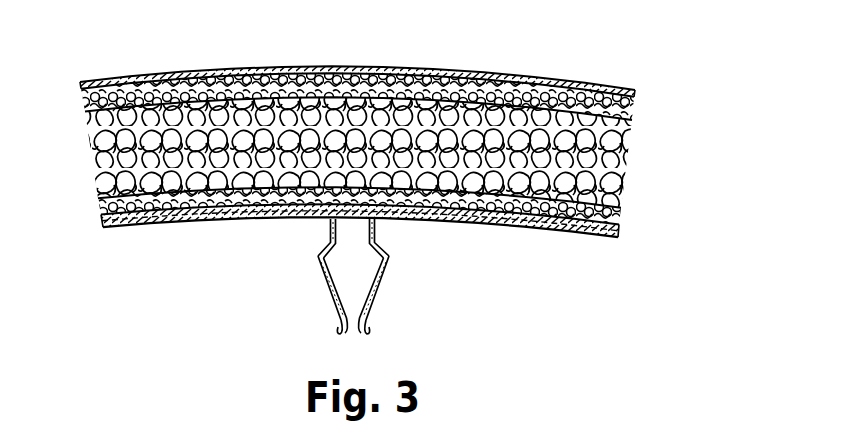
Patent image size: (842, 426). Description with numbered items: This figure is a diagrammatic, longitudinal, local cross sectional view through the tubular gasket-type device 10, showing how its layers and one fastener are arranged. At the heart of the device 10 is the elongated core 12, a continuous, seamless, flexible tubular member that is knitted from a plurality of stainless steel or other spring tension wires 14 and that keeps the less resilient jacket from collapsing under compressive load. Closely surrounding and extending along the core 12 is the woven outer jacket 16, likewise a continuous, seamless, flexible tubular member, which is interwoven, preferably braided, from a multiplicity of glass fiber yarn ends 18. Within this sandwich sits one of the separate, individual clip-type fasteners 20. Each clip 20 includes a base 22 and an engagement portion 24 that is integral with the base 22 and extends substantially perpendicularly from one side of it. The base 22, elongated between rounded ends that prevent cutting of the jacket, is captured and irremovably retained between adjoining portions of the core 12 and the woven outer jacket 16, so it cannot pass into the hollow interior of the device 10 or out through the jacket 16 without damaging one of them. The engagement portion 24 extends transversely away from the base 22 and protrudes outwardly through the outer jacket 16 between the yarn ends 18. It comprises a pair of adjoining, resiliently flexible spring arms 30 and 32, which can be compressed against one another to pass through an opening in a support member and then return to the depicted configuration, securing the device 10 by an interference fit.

The tubular gasket-type device 10 is at (545, 66).
The elongated core 12 is at (597, 150).
The spring tension wires 14 is at (489, 100).
The woven outer jacket 16 is at (557, 241).
The glass fiber yarn ends 18 is at (592, 237).
The fasteners 20 is at (404, 254).
The base 22 is at (288, 222).
The engagement portion 24 is at (320, 297).
The spring arm 30 is at (337, 325).
The spring arm 32 is at (373, 302).